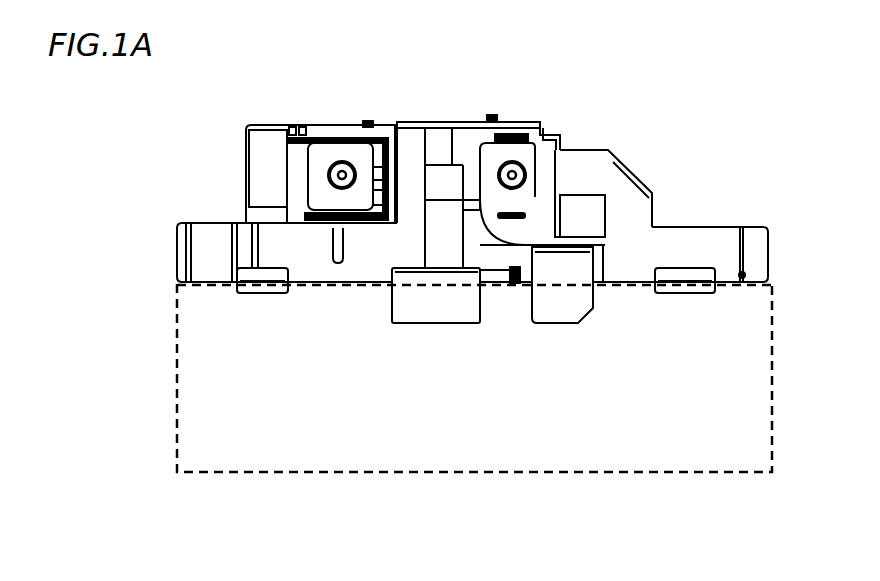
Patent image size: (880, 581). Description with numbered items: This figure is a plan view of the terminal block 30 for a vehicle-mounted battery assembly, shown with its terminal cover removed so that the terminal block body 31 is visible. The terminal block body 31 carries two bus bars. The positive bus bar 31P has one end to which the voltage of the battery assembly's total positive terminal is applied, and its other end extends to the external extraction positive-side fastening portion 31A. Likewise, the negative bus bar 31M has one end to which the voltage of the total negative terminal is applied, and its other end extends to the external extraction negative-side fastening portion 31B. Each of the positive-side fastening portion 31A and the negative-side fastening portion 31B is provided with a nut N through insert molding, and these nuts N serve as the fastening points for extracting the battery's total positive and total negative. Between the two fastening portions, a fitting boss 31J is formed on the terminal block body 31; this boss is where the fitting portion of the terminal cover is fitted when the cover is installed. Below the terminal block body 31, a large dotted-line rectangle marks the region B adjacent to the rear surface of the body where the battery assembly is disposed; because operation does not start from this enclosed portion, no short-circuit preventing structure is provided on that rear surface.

The terminal block 30 is at (722, 213).
The terminal block body 31 is at (613, 172).
The positive bus bar 31P is at (322, 155).
The external extraction positive-side fastening portion 31A is at (343, 165).
The fitting boss 31J is at (442, 180).
The external extraction negative-side fastening portion 31B is at (508, 158).
The negative bus bar 31M is at (527, 157).
The nut N is at (370, 128).
The base region B is at (713, 443).